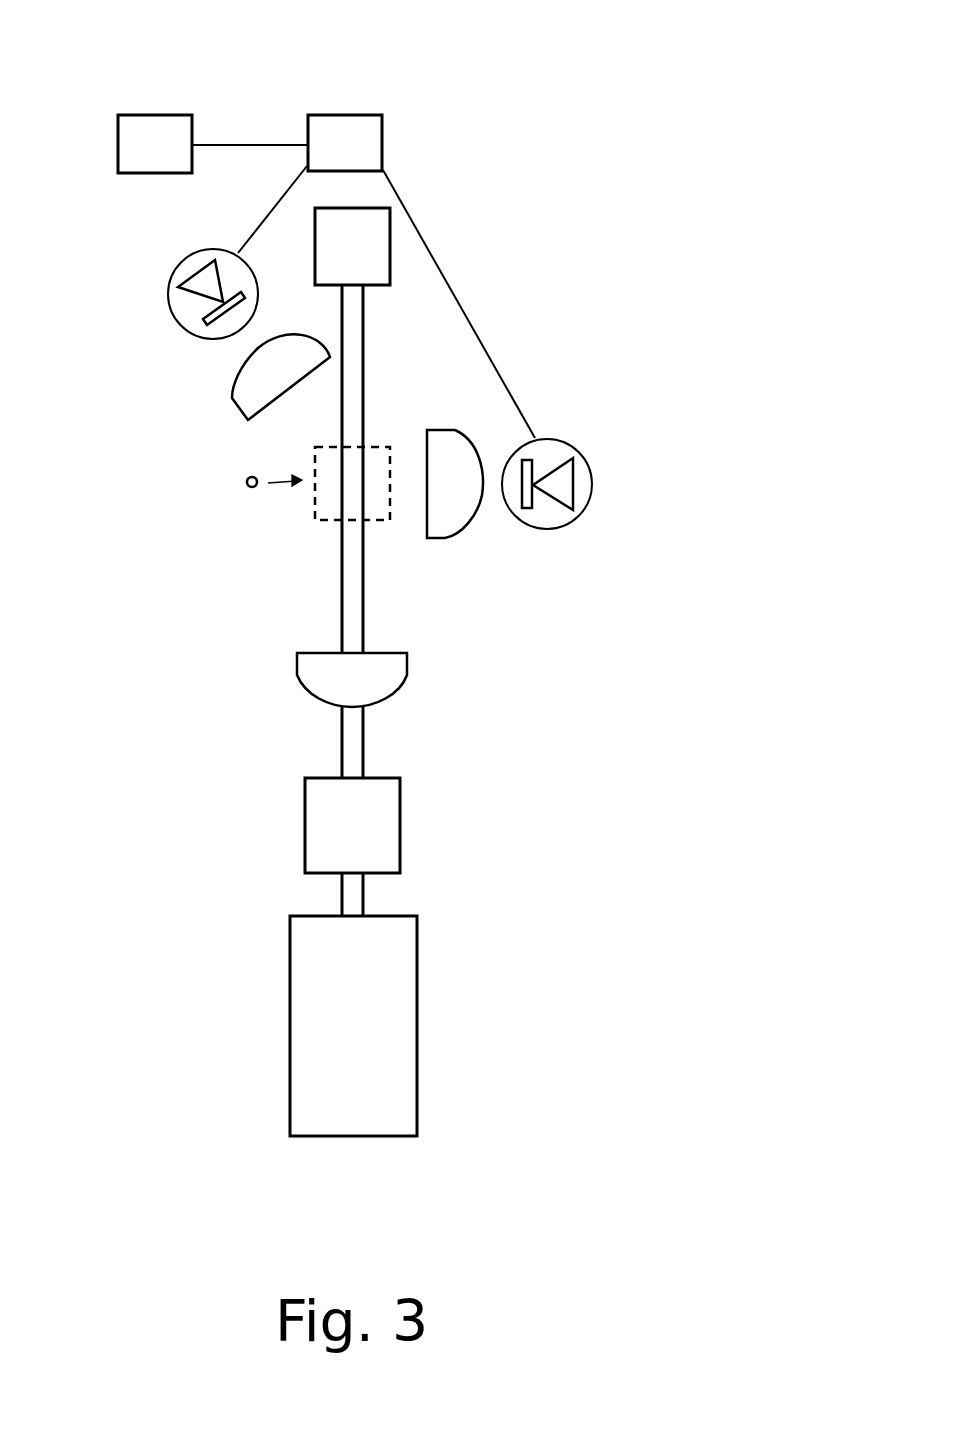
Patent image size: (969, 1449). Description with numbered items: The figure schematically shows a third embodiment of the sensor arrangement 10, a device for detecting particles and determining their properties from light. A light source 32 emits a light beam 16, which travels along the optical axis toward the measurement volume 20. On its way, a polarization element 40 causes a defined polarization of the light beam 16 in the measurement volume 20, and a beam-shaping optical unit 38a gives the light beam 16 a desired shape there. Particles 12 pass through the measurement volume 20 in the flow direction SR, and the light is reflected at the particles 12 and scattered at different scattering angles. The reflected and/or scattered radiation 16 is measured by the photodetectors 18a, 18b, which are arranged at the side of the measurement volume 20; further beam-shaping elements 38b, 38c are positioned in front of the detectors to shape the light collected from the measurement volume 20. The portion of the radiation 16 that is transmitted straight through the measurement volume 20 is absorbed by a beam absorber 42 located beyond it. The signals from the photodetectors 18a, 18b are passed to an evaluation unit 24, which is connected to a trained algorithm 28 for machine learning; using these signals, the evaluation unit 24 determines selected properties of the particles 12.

The sensor arrangement 10 is at (465, 128).
The algorithm 28 is at (157, 176).
The evaluation unit 24 is at (383, 140).
The beam absorber 42 is at (373, 272).
The detector 18a is at (172, 317).
The detector 18b is at (547, 437).
The beam-shaping element 38c is at (248, 417).
The beam-shaping element 38b is at (443, 530).
The beam-shaping optical unit 38a is at (377, 685).
The measurement volume 20 is at (375, 510).
The particle 12 is at (246, 483).
The flow direction SR is at (277, 485).
The polarization element 40 is at (320, 830).
The light beam 16 is at (352, 900).
The light source 32 is at (297, 1003).